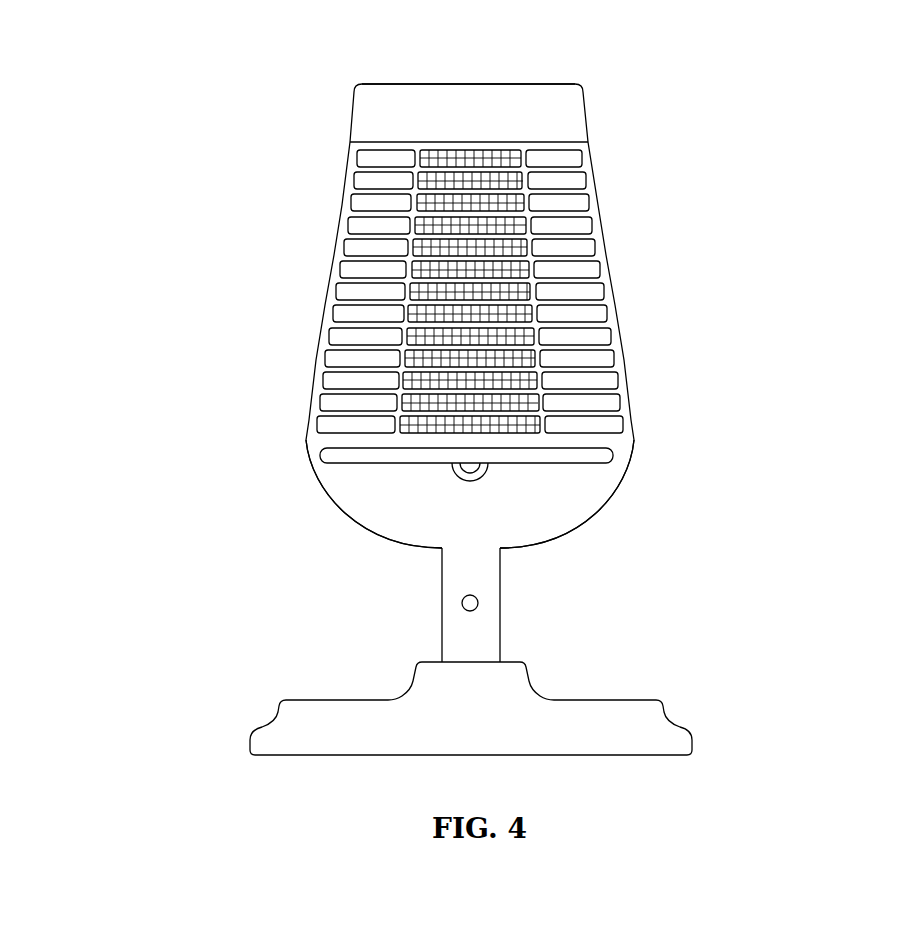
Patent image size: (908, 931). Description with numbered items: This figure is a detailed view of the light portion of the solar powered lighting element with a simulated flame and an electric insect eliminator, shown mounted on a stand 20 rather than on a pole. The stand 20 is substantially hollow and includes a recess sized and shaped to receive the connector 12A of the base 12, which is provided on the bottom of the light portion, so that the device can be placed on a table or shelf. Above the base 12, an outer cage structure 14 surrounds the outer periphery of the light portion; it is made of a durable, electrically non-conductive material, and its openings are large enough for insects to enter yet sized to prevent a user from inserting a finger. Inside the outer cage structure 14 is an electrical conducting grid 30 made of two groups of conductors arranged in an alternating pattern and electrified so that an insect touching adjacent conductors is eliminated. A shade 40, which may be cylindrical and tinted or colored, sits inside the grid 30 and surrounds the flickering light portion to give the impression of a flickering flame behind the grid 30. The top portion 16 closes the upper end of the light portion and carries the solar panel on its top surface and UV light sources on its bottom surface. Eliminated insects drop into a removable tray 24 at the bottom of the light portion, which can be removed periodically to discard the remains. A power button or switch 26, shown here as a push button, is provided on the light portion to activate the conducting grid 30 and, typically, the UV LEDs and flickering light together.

The base 12 is at (568, 489).
The connector 12A is at (480, 620).
The outer cage structure 14 is at (621, 332).
The top portion 16 is at (540, 121).
The stand 20 is at (393, 700).
The removable tray 24 is at (378, 457).
The power button or switch 26 is at (470, 602).
The electrical conducting grid 30 is at (518, 288).
The shade 40 is at (452, 248).